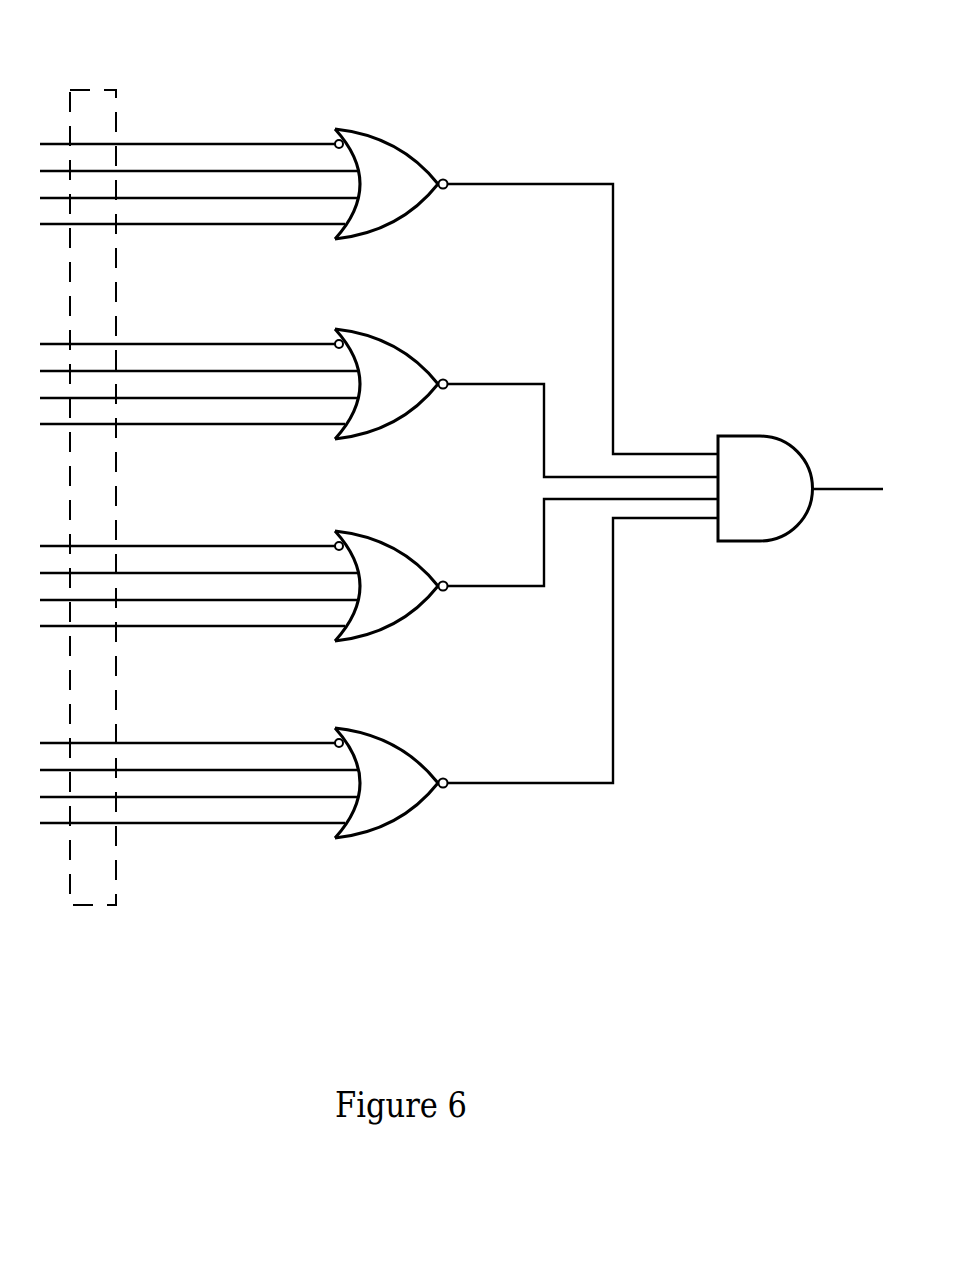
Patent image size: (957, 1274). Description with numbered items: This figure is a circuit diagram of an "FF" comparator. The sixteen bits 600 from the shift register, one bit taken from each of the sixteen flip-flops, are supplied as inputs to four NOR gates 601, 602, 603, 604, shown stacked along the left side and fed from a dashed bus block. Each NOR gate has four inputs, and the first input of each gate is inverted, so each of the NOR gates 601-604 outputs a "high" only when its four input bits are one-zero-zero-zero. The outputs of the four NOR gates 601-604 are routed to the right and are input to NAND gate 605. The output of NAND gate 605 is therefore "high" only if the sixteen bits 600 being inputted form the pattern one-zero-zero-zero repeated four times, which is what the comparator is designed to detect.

The sixteen bits 600 is at (90, 90).
The NOR gate 601 is at (407, 196).
The NOR gate 602 is at (407, 396).
The NOR gate 603 is at (407, 598).
The NOR gate 604 is at (407, 795).
The NAND gate 605 is at (779, 504).